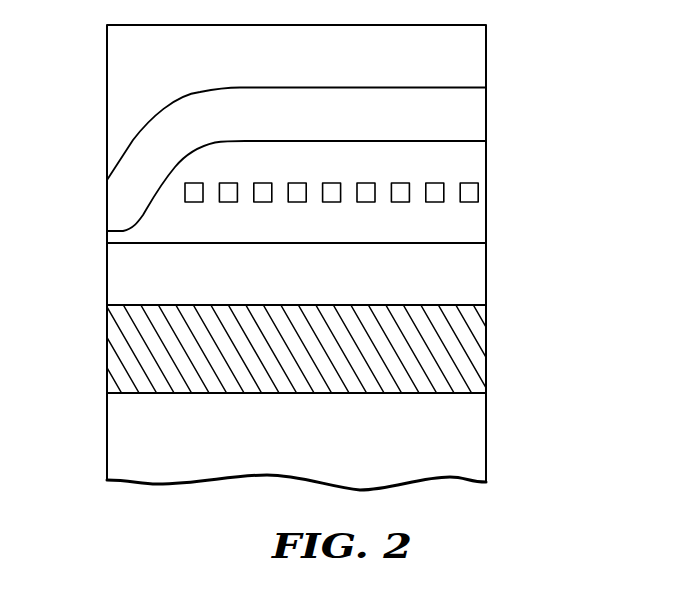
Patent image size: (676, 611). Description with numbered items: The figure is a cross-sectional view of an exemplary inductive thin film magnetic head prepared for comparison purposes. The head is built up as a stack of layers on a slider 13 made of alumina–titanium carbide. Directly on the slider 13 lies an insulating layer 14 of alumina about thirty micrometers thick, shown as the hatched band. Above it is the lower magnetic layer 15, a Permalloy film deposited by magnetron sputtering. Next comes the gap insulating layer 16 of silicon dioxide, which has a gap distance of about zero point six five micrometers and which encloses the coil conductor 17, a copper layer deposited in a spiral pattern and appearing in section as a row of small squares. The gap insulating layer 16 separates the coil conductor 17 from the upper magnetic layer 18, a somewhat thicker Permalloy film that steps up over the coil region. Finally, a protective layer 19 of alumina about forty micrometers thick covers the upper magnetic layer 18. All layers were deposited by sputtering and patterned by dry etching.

The slider 13 is at (482, 460).
The insulating layer 14 is at (482, 333).
The lower magnetic layer 15 is at (482, 275).
The gap insulating layer 16 is at (482, 226).
The coil conductor 17 is at (443, 183).
The upper magnetic layer 18 is at (482, 113).
The protective layer 19 is at (482, 57).